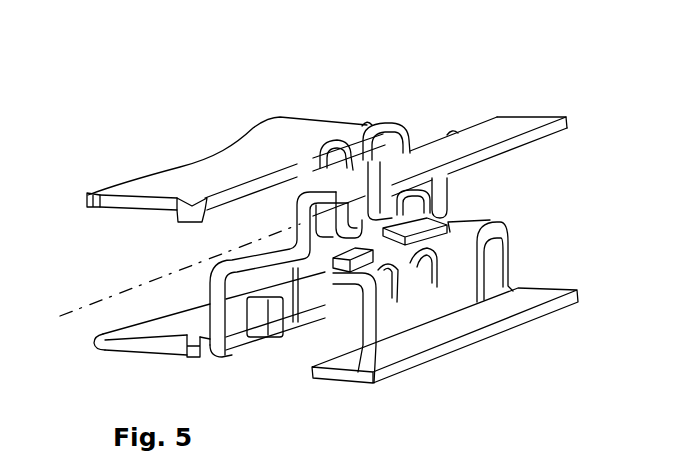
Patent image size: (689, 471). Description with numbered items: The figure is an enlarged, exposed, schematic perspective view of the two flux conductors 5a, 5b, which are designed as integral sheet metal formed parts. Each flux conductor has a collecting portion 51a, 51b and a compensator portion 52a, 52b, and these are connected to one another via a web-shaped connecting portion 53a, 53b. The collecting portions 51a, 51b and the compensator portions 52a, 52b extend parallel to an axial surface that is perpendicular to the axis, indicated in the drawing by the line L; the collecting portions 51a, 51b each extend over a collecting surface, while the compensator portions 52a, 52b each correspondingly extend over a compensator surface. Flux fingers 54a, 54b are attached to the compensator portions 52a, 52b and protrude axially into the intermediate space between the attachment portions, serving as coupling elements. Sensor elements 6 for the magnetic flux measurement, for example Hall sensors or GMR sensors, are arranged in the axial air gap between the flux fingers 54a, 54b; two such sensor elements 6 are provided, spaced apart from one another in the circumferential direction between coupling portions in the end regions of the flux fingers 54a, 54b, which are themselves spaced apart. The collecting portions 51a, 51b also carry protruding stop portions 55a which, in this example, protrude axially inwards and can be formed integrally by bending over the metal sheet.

The flux conductor 5a is at (580, 297).
The flux conductor 5b is at (571, 116).
The sensor element 6 is at (430, 232).
The collecting portion 51a is at (238, 148).
The collecting portion 51b is at (147, 331).
The compensator portion 52a is at (487, 317).
The compensator portion 52b is at (497, 118).
The connecting portion 53a is at (498, 262).
The connecting portion 53b is at (218, 283).
The flux finger 54a is at (445, 257).
The flux finger 54b is at (438, 190).
The stop portion 55a is at (188, 200).
The longitudinal axis L is at (107, 302).